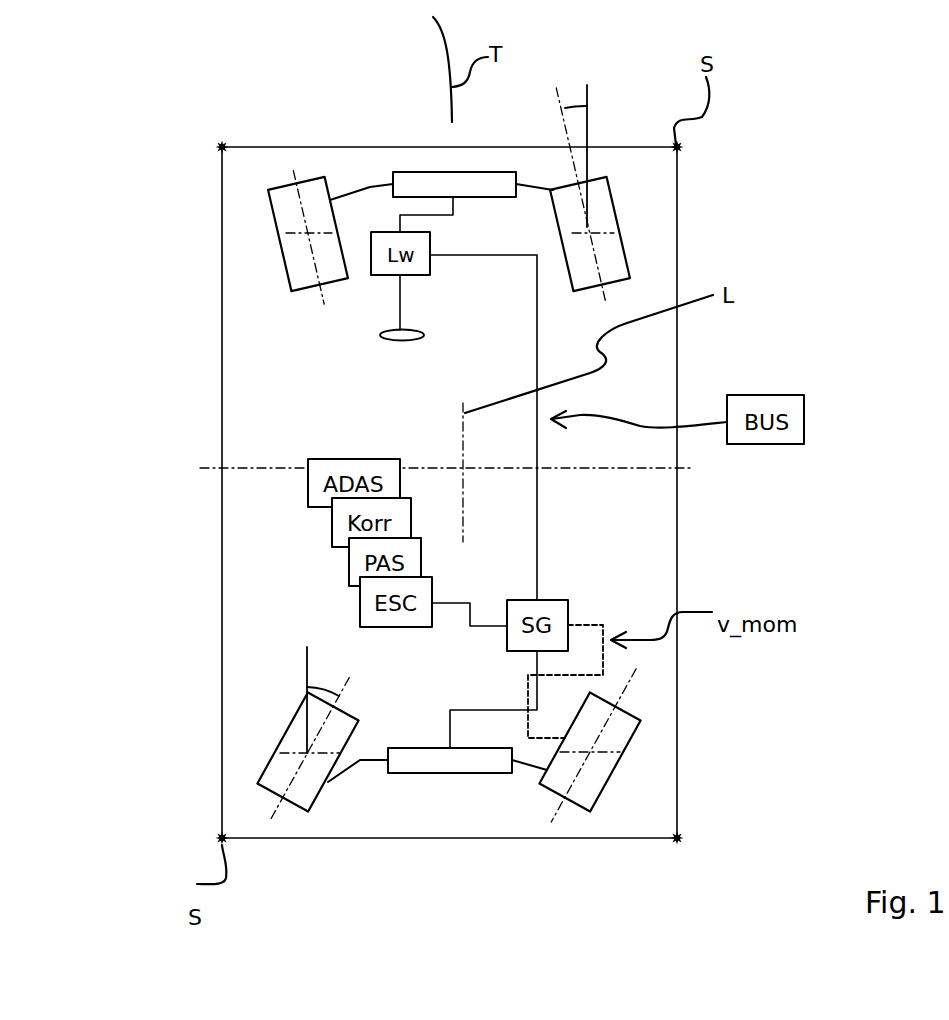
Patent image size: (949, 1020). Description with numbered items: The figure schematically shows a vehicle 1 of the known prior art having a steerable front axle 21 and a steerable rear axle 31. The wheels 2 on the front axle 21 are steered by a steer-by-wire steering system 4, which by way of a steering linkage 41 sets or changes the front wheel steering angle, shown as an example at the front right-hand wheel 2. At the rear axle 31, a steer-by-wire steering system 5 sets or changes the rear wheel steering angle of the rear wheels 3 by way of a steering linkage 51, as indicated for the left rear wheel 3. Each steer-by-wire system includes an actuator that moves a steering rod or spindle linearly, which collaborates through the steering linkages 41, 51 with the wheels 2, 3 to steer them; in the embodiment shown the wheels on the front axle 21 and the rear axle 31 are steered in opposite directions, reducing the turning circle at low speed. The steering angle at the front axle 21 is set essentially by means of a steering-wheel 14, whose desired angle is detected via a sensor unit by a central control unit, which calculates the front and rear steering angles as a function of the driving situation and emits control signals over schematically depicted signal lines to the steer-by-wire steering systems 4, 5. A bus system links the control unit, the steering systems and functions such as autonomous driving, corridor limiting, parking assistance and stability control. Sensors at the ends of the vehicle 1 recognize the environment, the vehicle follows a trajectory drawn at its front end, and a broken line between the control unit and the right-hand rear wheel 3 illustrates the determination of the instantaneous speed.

The vehicle 1 is at (170, 596).
The wheels 2 is at (278, 223).
The rear wheels 3 is at (268, 760).
The steer-by-wire steering system 4 is at (467, 182).
The steer-by-wire steering system 5 is at (450, 760).
The steering-wheel 14 is at (381, 336).
The front axle 21 is at (295, 161).
The rear axle 31 is at (593, 816).
The steering linkage 41 is at (370, 187).
The steering linkage 51 is at (349, 771).